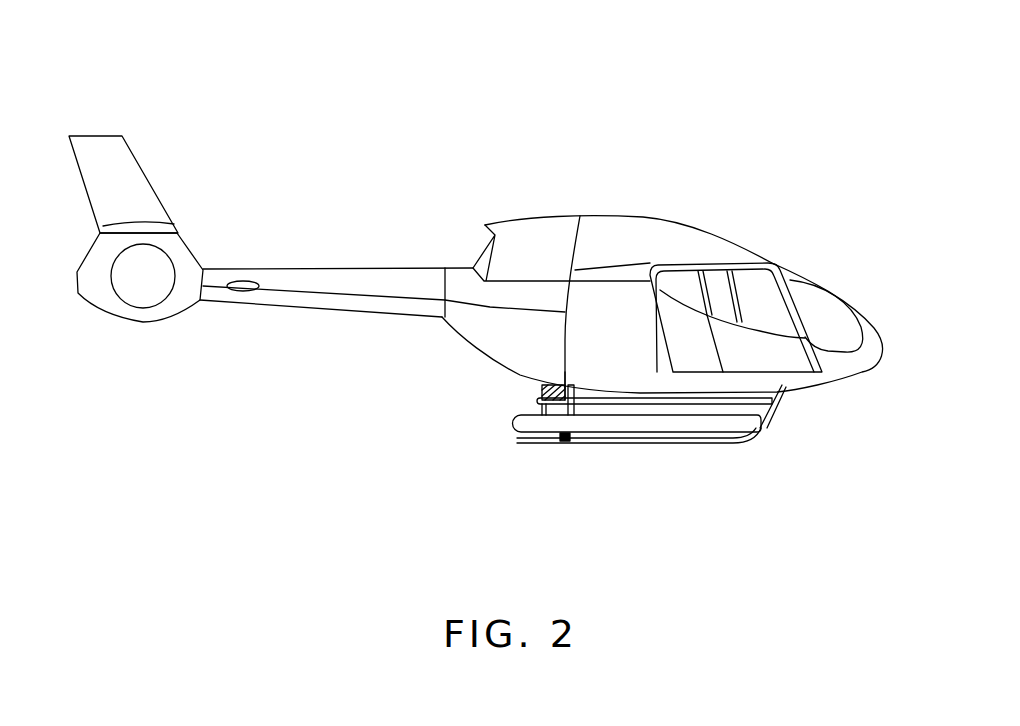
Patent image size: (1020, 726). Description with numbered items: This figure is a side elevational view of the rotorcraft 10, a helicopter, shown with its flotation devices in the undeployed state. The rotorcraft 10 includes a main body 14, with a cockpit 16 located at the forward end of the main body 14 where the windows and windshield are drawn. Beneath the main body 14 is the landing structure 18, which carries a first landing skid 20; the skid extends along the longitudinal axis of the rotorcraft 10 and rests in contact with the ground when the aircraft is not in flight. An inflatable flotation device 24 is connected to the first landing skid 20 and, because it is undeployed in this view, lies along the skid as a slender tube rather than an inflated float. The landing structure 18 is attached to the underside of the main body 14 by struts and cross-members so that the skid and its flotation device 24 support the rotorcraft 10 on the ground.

The rotorcraft 10 is at (560, 131).
The main body 14 is at (758, 255).
The cockpit 16 is at (773, 298).
The landing structure 18 is at (797, 420).
The first landing skid 20 is at (700, 445).
The inflatable flotation device 24 is at (623, 423).